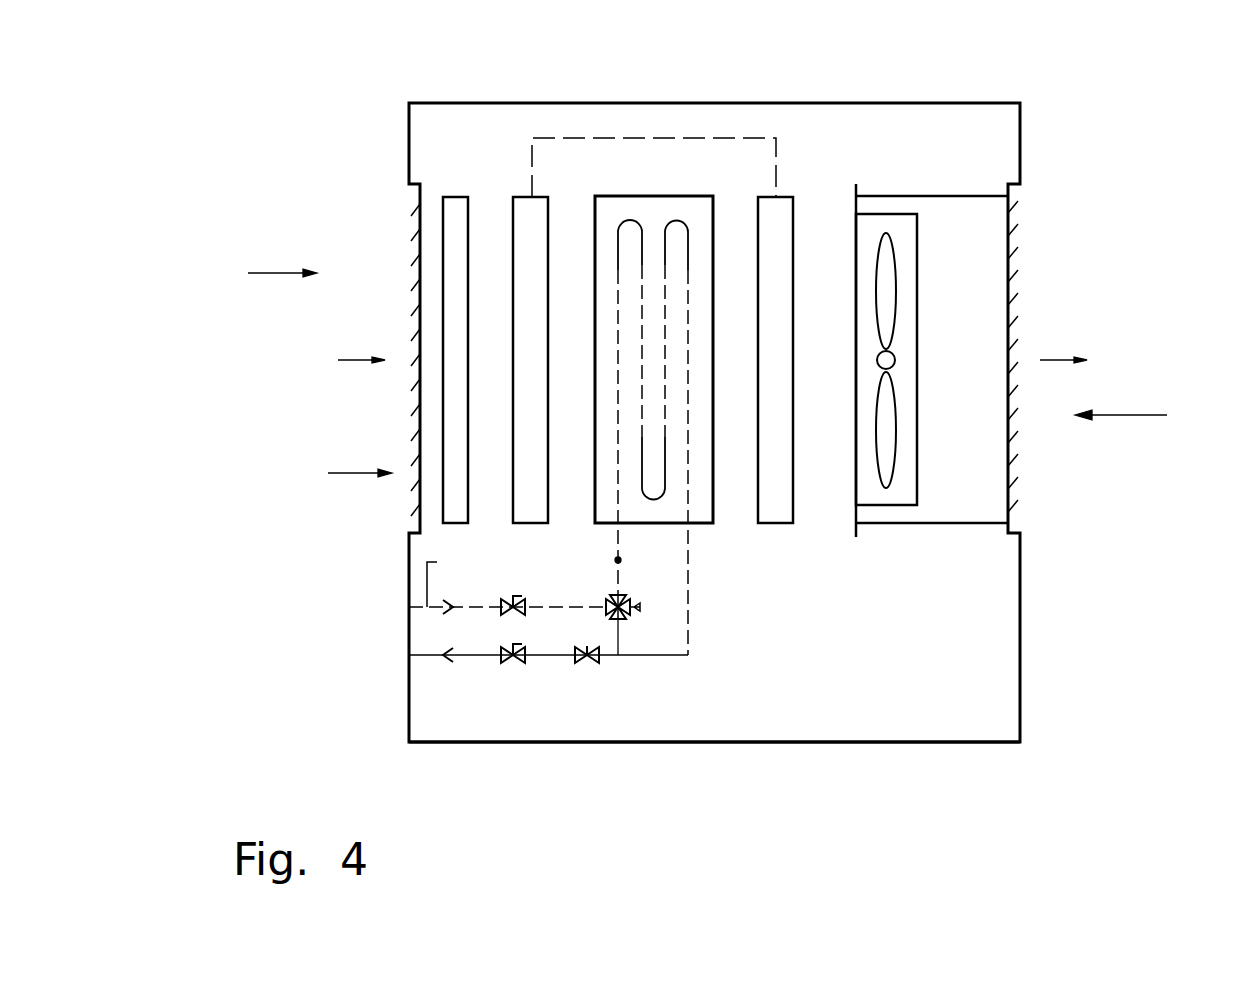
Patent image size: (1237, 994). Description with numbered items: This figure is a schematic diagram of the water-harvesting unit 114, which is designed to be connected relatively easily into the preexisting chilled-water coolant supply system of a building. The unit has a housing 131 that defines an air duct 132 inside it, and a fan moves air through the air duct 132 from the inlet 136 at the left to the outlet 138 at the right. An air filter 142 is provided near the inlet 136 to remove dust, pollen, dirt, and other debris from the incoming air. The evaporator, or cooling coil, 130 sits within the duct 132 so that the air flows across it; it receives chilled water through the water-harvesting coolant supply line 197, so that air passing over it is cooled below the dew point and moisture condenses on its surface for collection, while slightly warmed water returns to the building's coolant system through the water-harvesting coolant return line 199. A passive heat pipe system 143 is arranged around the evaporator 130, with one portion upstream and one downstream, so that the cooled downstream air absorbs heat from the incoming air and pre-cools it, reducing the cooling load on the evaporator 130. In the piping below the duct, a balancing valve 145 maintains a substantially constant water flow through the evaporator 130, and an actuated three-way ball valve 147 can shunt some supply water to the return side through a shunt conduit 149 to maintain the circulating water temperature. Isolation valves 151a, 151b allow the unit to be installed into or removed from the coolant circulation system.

The water-harvesting unit 114 is at (295, 312).
The evaporator (cooling coil) 130 is at (679, 196).
The housing 131 is at (885, 742).
The air duct 132 is at (810, 685).
The inlet 136 is at (338, 475).
The outlet 138 is at (1127, 393).
The air filter 142 is at (453, 197).
The heat pipe system 143 is at (513, 196).
The balancing valve 145 is at (592, 657).
The three-way ball valve 147 is at (612, 598).
The shunt conduit 149 is at (618, 637).
The isolation valve 151a is at (510, 600).
The isolation valve 151b is at (515, 657).
The water-harvesting coolant supply line 197 is at (458, 657).
The water-harvesting coolant return line 199 is at (454, 580).